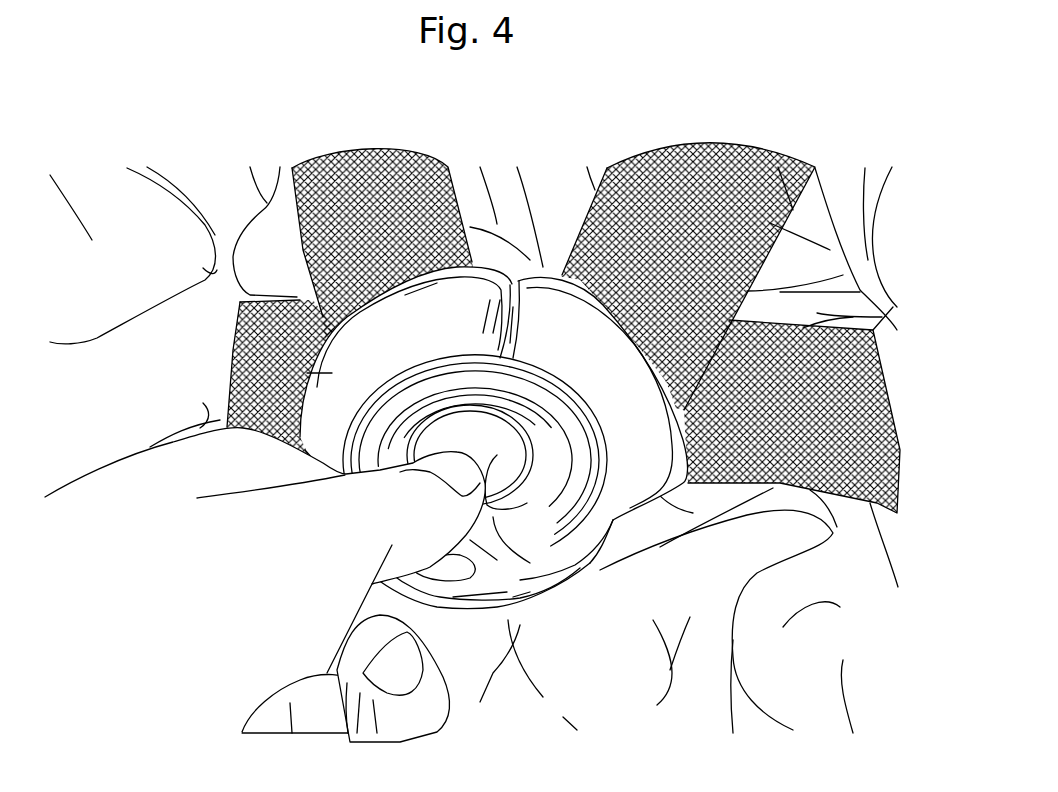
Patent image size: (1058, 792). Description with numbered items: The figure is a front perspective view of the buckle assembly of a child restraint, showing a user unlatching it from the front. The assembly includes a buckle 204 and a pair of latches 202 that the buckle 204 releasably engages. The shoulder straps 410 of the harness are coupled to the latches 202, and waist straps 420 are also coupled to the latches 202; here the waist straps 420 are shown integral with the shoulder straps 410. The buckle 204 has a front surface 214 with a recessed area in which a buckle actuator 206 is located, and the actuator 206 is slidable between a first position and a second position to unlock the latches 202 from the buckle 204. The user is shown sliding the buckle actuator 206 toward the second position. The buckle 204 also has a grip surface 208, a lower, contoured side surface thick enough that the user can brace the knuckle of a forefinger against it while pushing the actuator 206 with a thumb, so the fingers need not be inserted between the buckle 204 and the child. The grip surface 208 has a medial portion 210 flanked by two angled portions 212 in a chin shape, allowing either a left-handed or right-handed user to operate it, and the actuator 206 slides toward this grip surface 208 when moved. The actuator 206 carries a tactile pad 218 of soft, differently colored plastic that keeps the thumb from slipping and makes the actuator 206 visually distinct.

The latches 202 is at (553, 302).
The buckle 204 is at (600, 571).
The buckle actuator 206 is at (533, 598).
The grip surface 208 is at (467, 611).
The medial portion 210 is at (430, 603).
The angled portions 212 is at (507, 604).
The front surface 214 is at (577, 530).
The tactile pad 218 is at (497, 457).
The shoulder straps 410 is at (345, 185).
The waist straps 420 is at (240, 395).